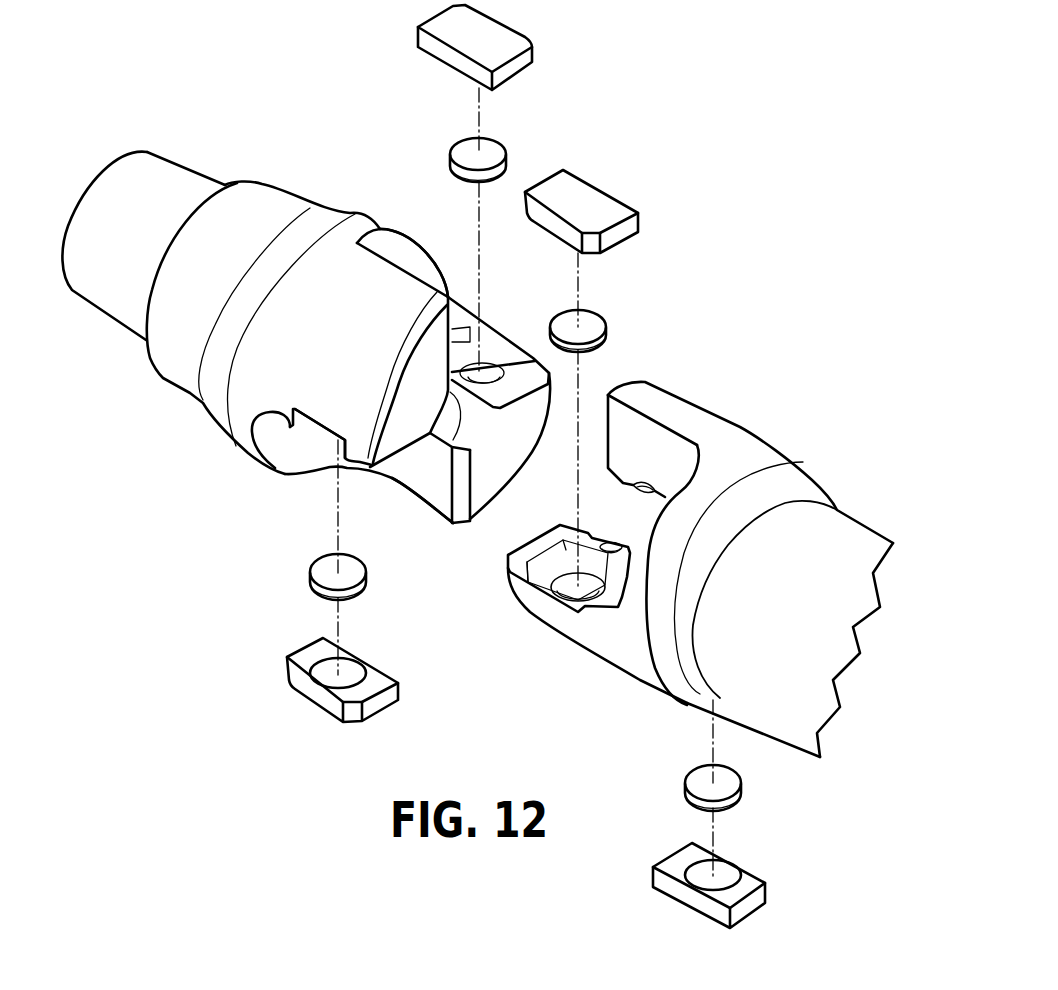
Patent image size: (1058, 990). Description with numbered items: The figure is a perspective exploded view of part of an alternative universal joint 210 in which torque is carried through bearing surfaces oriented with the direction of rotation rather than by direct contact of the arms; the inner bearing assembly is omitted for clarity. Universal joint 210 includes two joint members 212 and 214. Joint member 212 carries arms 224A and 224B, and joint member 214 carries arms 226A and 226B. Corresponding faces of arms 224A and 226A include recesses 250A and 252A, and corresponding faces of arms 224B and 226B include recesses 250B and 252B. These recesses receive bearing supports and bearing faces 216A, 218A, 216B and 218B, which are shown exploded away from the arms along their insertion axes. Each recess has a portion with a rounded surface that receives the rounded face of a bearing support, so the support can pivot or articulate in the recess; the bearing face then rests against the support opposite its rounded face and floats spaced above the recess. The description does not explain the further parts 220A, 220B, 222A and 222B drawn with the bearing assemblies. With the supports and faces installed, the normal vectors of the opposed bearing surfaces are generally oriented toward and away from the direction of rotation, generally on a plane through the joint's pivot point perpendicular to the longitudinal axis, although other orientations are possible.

The universal joint 210 is at (616, 85).
The joint member 212 is at (298, 197).
The joint member 214 is at (790, 455).
The bearing support 216A is at (640, 224).
The bearing support 216B is at (311, 580).
The bearing face 218A is at (608, 333).
The bearing face 218B is at (286, 672).
The second insert 220A is at (417, 31).
The second insert 220B is at (745, 790).
The second disc 222A is at (450, 157).
The second disc 222B is at (767, 896).
The arm 224A is at (328, 367).
The arm 224B is at (438, 510).
The arm 226A is at (593, 652).
The arm 226B is at (742, 427).
The recess 250A is at (323, 433).
The recess 250B is at (492, 372).
The recess 252A is at (566, 597).
The recess 252B is at (663, 492).